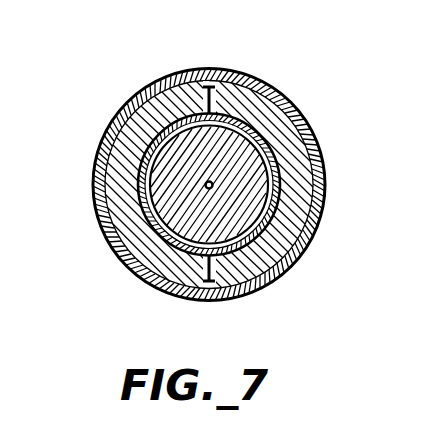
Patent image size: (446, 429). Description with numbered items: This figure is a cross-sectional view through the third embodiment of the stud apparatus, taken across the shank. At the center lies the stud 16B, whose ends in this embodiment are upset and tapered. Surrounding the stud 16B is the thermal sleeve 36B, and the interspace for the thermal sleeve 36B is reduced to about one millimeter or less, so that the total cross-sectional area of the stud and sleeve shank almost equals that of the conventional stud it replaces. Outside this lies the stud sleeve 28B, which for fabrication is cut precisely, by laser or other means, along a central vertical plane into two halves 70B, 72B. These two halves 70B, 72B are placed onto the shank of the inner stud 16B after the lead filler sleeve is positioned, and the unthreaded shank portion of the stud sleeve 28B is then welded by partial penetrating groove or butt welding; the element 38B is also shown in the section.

The stud sleeve 28B is at (158, 113).
The stud 16B is at (268, 107).
The thermal sleeve 36B is at (322, 220).
The outer sheath layer 38B is at (264, 287).
The half of the stud sleeve 70B is at (160, 246).
The half of the stud sleeve 72B is at (255, 258).